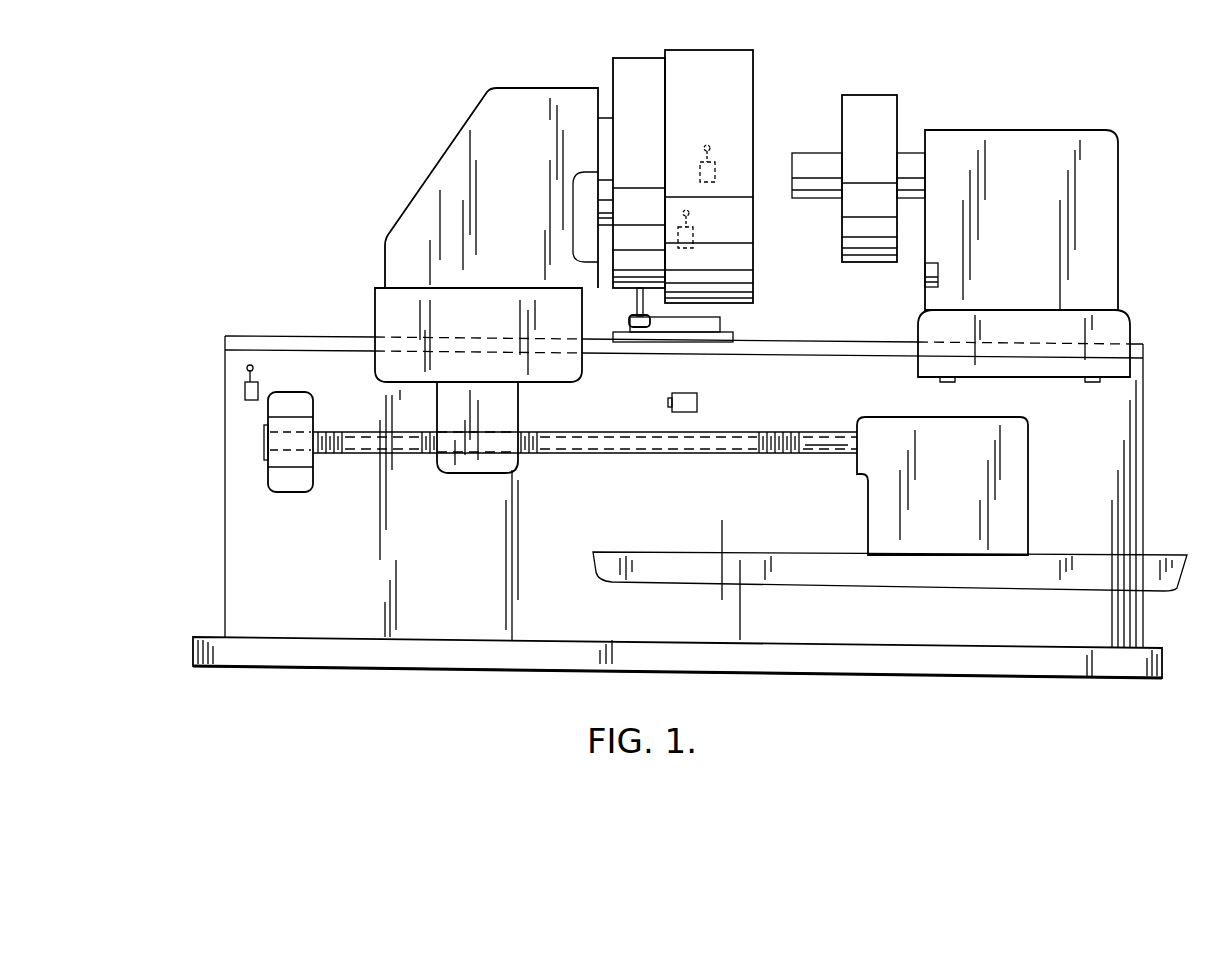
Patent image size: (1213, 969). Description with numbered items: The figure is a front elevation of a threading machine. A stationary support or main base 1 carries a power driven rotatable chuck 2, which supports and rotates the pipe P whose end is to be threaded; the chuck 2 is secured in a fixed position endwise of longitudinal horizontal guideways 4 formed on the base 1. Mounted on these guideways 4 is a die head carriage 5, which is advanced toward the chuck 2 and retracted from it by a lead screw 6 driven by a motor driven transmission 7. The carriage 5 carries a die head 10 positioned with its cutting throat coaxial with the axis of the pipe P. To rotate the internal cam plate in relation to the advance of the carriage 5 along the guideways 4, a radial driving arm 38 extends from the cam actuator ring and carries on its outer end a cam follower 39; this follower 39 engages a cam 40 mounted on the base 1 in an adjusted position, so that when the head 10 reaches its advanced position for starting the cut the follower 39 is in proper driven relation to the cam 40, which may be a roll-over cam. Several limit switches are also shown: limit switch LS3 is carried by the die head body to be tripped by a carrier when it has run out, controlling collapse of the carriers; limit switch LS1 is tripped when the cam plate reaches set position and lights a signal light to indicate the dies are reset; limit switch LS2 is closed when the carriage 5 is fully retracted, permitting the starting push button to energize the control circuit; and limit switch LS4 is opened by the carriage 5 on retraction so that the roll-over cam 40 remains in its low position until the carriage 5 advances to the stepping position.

The main base 1 is at (1145, 510).
The rotatable chuck 2 is at (1118, 258).
The guideways 4 is at (813, 341).
The die head carriage 5 is at (376, 300).
The lead screw 6 is at (780, 455).
The motor driven transmission 7 is at (1030, 513).
The die head 10 is at (710, 43).
The radial driving arm 38 is at (637, 301).
The cam follower 39 is at (645, 328).
The cam 40 is at (722, 322).
The pipe P is at (816, 152).
The limit switch LS1 is at (693, 237).
The limit switch LS2 is at (244, 388).
The limit switch LS3 is at (716, 160).
The limit switch LS4 is at (700, 402).